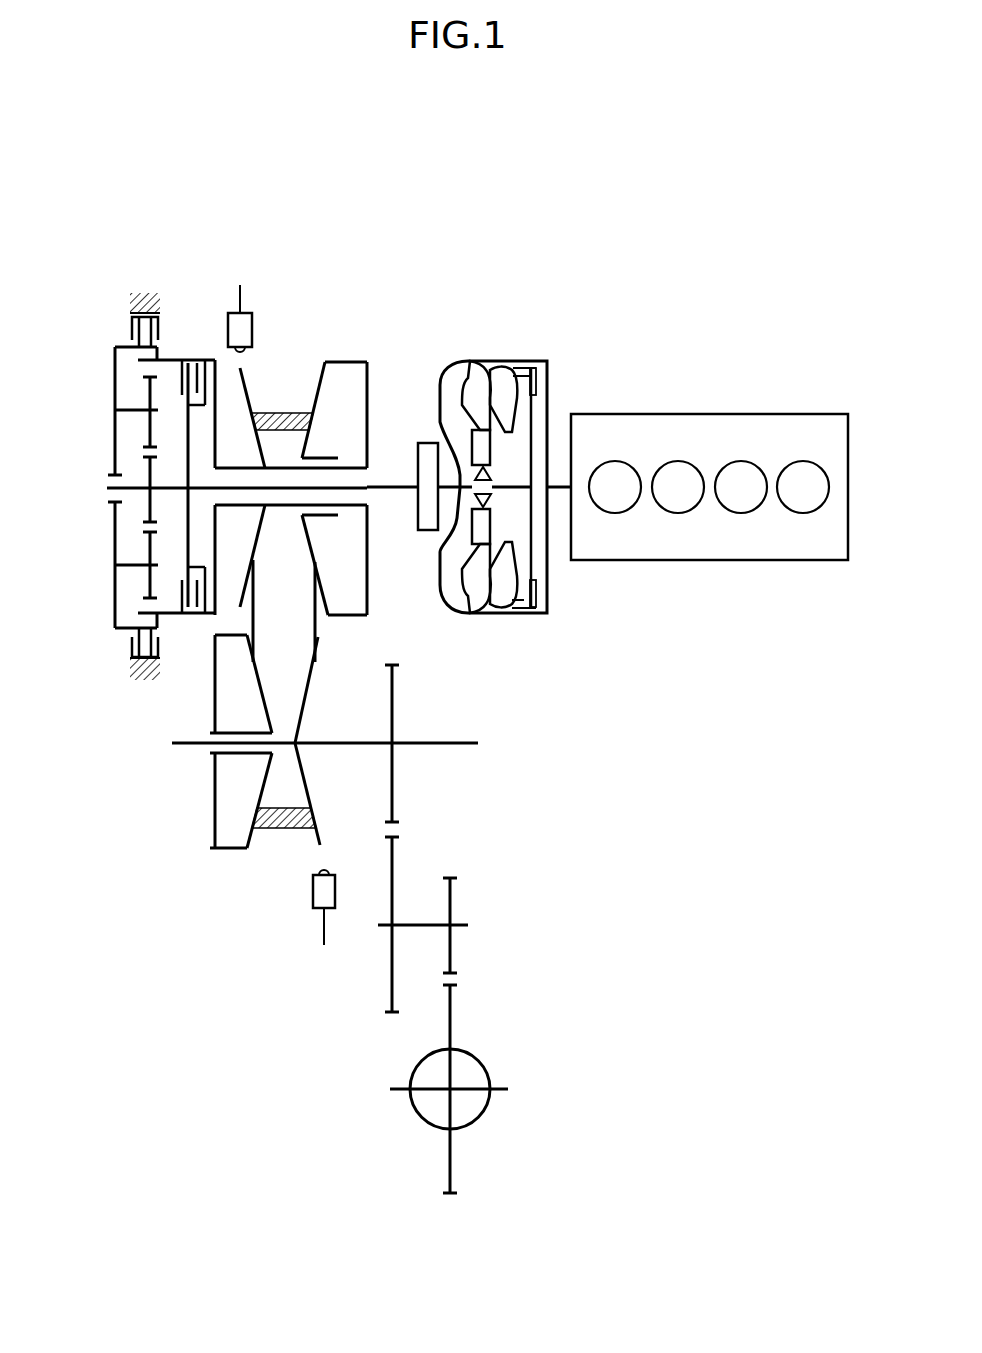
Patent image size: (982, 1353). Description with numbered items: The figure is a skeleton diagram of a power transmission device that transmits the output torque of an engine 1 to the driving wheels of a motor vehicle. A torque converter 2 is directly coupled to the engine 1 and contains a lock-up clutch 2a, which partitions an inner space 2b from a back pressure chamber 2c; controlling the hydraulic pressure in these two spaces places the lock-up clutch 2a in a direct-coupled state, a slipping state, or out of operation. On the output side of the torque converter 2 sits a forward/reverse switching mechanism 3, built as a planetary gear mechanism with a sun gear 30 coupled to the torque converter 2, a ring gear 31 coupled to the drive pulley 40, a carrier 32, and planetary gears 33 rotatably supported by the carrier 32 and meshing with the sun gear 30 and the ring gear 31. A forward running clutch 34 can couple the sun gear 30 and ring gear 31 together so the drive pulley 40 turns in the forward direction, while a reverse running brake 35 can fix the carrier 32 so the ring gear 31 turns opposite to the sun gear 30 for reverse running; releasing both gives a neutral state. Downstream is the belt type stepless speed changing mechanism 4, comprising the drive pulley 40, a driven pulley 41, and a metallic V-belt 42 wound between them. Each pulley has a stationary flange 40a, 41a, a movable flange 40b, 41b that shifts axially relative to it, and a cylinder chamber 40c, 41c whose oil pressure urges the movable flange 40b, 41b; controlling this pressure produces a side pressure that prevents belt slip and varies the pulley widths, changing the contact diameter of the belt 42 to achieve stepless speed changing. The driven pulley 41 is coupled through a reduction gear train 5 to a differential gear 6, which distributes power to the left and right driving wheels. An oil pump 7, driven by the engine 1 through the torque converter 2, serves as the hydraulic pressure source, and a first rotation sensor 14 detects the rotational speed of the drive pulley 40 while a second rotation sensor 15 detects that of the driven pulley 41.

The engine 1 is at (697, 413).
The torque converter 2 is at (534, 463).
The lock-up clutch 2a is at (536, 604).
The inner space 2b is at (477, 400).
The back pressure chamber 2c is at (540, 424).
The forward/reverse switching mechanism 3 is at (146, 493).
The belt type stepless speed changing mechanism 4 is at (306, 599).
The reduction gear train 5 is at (450, 826).
The differential gear 6 is at (482, 1062).
The oil pump 7 is at (425, 535).
The first rotation sensor 14 is at (221, 330).
The second rotation sensor 15 is at (337, 893).
The sun gear 30 is at (140, 503).
The ring gear 31 is at (167, 360).
The carrier 32 is at (113, 392).
The planetary gears 33 is at (145, 583).
The forward running clutch 34 is at (200, 360).
The reverse running brake 35 is at (130, 328).
The drive pulley 40 is at (341, 447).
The stationary flange 40a is at (247, 382).
The movable flange 40b is at (313, 365).
The cylinder chamber 40c is at (357, 432).
The driven pulley 41 is at (306, 808).
The stationary flange 41a is at (303, 705).
The movable flange 41b is at (279, 850).
The cylinder chamber 41c is at (232, 812).
The metallic V-belt 42 is at (283, 830).